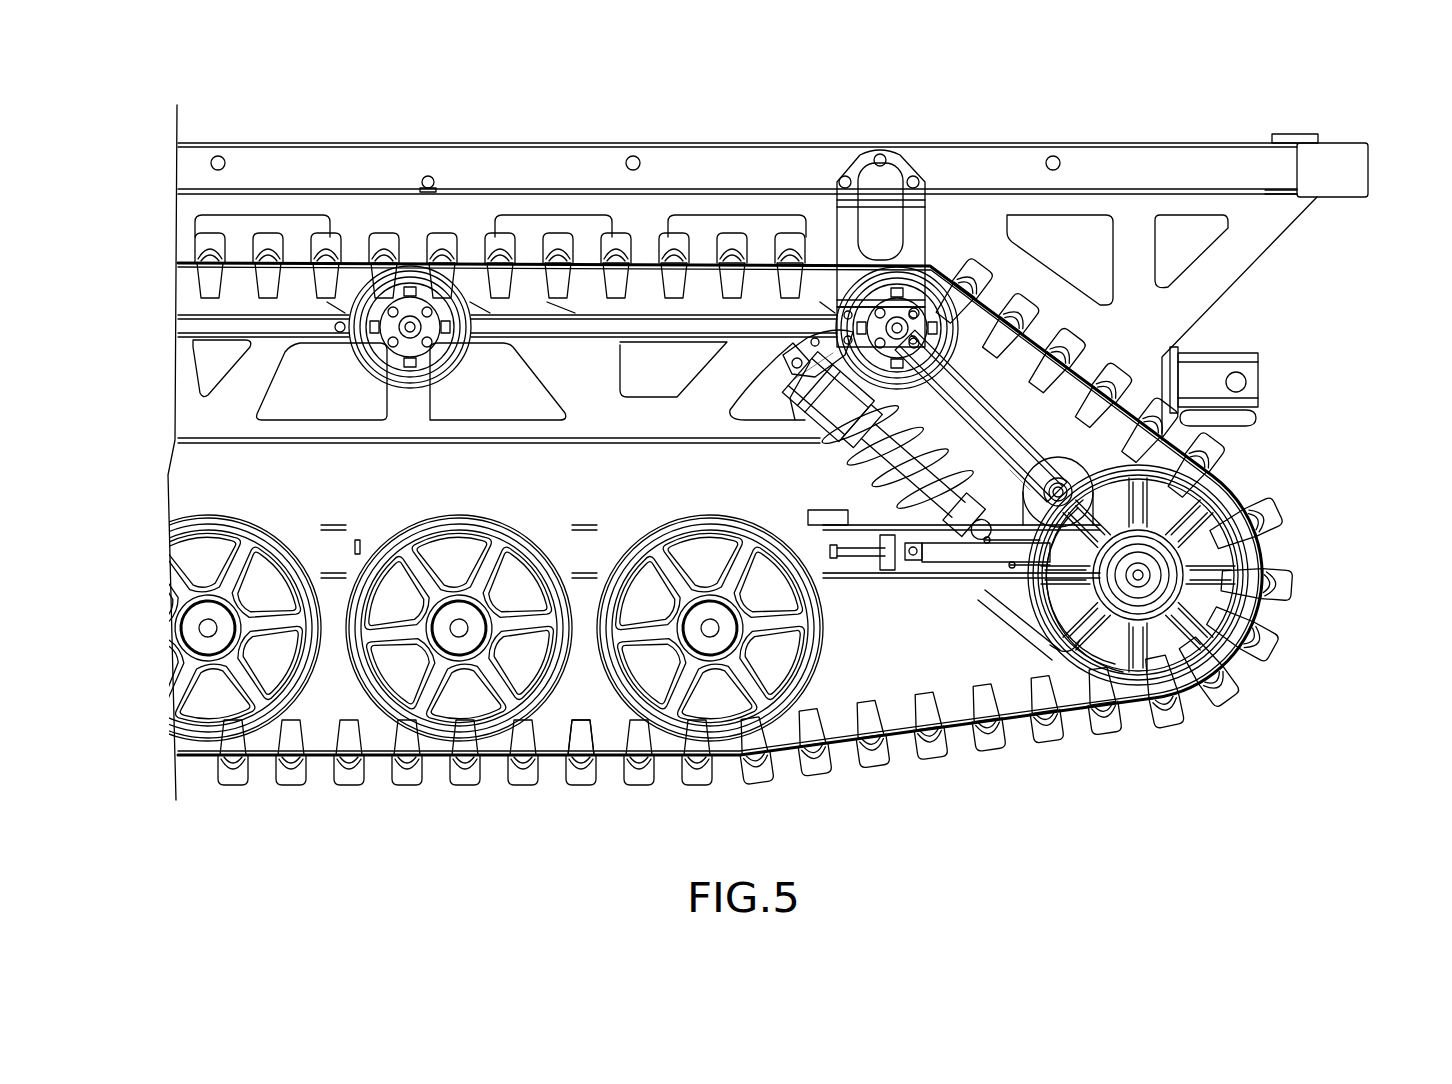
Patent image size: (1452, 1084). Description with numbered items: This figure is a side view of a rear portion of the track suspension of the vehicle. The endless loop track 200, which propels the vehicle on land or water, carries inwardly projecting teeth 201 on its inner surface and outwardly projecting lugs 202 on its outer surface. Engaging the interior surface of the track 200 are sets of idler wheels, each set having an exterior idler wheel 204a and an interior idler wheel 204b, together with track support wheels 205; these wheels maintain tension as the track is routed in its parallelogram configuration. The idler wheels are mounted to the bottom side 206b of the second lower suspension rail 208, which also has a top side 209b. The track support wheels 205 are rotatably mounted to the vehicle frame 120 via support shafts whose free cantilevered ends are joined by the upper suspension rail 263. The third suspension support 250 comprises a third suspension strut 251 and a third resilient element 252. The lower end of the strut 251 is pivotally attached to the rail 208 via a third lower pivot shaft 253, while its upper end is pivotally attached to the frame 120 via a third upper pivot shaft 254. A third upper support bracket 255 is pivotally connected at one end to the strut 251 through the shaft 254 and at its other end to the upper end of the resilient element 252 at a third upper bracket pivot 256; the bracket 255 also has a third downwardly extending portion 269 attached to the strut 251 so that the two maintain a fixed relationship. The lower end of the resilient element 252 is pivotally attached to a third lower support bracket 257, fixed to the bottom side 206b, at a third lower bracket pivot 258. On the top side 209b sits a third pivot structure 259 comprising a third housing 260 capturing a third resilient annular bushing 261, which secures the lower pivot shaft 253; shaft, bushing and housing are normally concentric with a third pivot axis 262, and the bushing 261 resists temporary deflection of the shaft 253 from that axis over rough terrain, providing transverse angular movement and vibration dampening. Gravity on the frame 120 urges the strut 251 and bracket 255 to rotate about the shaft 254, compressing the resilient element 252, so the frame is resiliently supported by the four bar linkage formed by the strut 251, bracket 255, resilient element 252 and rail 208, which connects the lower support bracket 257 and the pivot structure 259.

The vehicle frame 120 is at (1232, 287).
The endless loop track 200 is at (390, 798).
The inwardly projecting teeth 201 is at (308, 737).
The outwardly projecting lugs 202 is at (297, 783).
The exterior idler wheel 204a is at (225, 512).
The interior idler wheel 204b is at (1260, 535).
The track support wheel 205 is at (350, 350).
The bottom side of second lower suspension rail 206b is at (840, 580).
The second lower suspension rail 208 is at (600, 755).
The top side of second lower suspension rail 209b is at (568, 522).
The third suspension support 250 is at (795, 462).
The third suspension strut 251 is at (957, 393).
The third resilient element 252 is at (862, 486).
The third lower pivot shaft 253 is at (1045, 478).
The third upper pivot shaft 254 is at (967, 275).
The third upper support bracket 255 is at (793, 343).
The third upper bracket pivot 256 is at (730, 410).
The third lower support bracket 257 is at (1010, 627).
The third lower bracket pivot 258 is at (1060, 540).
The third pivot structure 259 is at (1075, 600).
The third housing 260 is at (1172, 430).
The third resilient annular bushing 261 is at (1010, 458).
The third pivot axis 262 is at (1250, 580).
The upper suspension rail 263 is at (507, 340).
The third downwardly extending portion 269 is at (900, 328).